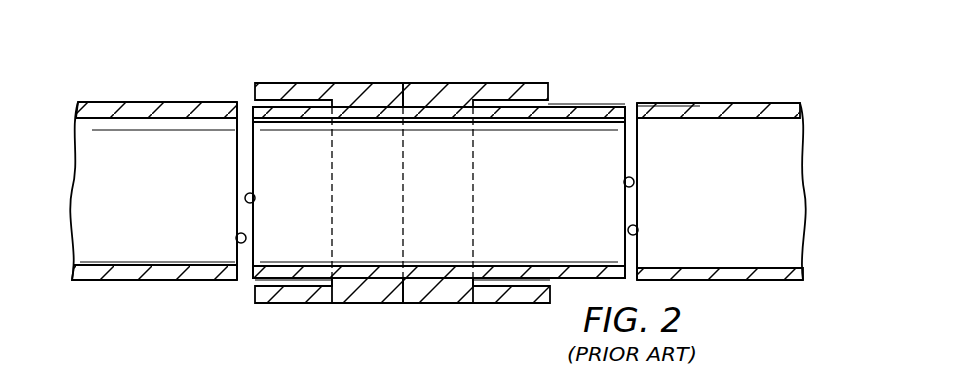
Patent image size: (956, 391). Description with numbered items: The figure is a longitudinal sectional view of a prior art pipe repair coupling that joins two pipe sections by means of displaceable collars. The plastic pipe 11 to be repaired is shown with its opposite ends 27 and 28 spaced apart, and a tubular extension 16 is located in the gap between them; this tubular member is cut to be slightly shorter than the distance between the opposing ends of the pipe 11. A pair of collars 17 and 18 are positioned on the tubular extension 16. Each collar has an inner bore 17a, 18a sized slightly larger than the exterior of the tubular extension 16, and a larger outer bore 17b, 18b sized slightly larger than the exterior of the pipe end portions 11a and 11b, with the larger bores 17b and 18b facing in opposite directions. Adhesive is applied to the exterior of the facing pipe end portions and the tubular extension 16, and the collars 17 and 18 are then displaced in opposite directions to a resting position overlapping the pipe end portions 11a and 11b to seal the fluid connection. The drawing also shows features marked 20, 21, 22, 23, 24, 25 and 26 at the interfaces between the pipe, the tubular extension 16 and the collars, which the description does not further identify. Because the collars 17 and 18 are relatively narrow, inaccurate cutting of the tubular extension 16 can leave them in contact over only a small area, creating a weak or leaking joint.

The plastic pipe 11 is at (437, 186).
The pipe end portion 11a is at (203, 279).
The pipe end portion 11b is at (733, 281).
The tubular extension 16 is at (431, 264).
The collar 17 is at (329, 160).
The inner bore 17a is at (357, 112).
The larger outer bore 17b is at (285, 120).
The collar 18 is at (476, 160).
The inner bore 18a is at (430, 110).
The larger outer bore 18b is at (510, 103).
The O-ring seal 20 is at (255, 200).
The O-ring seal 21 is at (624, 182).
The gap 22 is at (288, 283).
The gap 23 is at (512, 280).
The end portion 24 is at (593, 106).
The weld 25 is at (337, 304).
The weld 26 is at (460, 304).
The pipe end 27 is at (236, 242).
The pipe end 28 is at (638, 231).